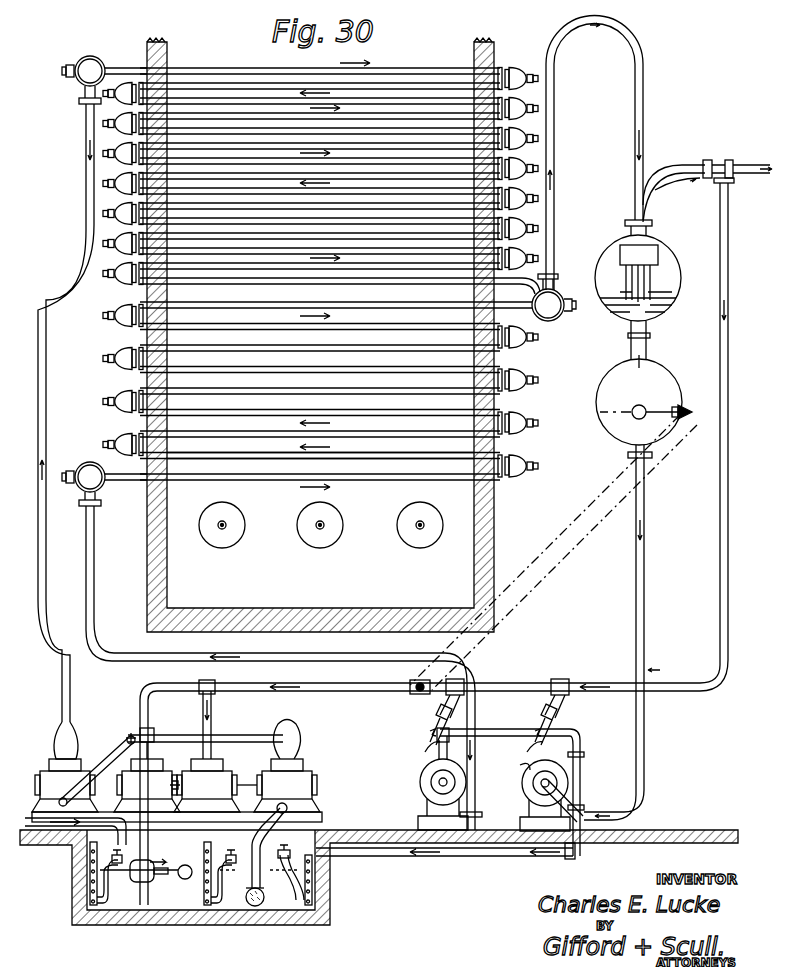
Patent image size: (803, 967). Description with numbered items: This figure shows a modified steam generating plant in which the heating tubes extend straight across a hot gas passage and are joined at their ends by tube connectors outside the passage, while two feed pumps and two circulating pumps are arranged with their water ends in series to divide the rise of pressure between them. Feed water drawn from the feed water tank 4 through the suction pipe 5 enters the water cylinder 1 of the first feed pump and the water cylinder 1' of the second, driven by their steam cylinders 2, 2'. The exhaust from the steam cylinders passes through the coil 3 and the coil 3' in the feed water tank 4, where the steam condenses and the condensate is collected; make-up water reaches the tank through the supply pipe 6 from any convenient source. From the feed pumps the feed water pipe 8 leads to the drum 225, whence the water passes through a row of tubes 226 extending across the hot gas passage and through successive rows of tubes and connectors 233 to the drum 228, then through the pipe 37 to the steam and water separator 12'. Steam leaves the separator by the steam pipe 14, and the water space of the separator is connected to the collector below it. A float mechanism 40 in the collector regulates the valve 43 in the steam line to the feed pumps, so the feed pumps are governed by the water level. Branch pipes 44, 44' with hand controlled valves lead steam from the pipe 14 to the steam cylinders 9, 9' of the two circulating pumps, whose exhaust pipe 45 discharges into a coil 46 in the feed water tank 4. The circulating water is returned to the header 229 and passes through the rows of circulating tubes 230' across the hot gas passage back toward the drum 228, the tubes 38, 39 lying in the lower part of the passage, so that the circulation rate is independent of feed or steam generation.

The water cylinder 1 is at (76, 774).
The water cylinder 1' is at (288, 766).
The steam cylinder 2 is at (198, 770).
The steam cylinder 2' is at (207, 746).
The coil 3 is at (79, 873).
The coil 3' is at (189, 899).
The feed water tank 4 is at (332, 912).
The suction pipe 5 is at (248, 890).
The water supply pipe 6 is at (28, 818).
The feed water pipe 8 is at (46, 548).
The steam cylinder 9 is at (467, 779).
The steam cylinder 9' is at (537, 792).
The steam and water separator 12' is at (630, 266).
The steam pipe 14 is at (730, 542).
The pipe 37 is at (645, 58).
The tube 38 is at (303, 532).
The tube 39 is at (232, 530).
The float mechanism 40 is at (650, 406).
The valve 43 is at (417, 696).
The pipe 44 is at (469, 712).
The pipe 44' is at (567, 712).
The exhaust pipe 45 is at (452, 860).
The coil 46 is at (312, 893).
The drum 225 is at (88, 56).
The tubes 226 is at (220, 70).
The drum 228 is at (555, 318).
The header 229 is at (84, 463).
The tubes 230' is at (320, 479).
The burners 233 is at (512, 70).